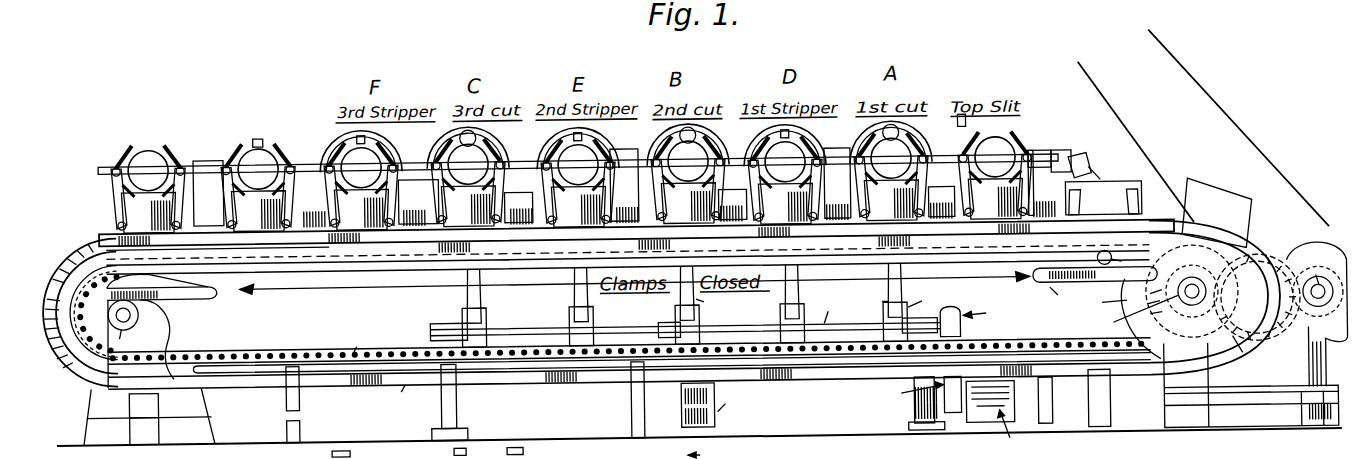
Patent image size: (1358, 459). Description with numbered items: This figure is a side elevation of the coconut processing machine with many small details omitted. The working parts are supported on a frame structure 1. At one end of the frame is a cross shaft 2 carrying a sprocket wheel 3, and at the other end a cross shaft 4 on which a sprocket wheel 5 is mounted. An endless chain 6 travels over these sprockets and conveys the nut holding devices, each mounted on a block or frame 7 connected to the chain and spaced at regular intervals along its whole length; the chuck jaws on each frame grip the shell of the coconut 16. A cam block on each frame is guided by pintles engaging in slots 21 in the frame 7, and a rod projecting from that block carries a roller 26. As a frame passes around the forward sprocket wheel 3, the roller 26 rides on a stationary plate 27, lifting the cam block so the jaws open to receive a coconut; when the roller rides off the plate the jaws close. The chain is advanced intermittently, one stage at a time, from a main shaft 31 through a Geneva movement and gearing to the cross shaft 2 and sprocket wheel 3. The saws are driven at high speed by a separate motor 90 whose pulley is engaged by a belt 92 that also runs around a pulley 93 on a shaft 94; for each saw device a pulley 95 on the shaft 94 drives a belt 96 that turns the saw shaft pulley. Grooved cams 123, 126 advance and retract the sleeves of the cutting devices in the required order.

The frame structure 1 is at (1164, 291).
The cross shaft 2 is at (1138, 318).
The sprocket wheel 3 is at (1257, 314).
The cross shaft 4 is at (123, 328).
The sprocket wheel 5 is at (152, 299).
The endless chain 6 is at (612, 311).
The block or frame 7 is at (626, 205).
The coconut 16 is at (629, 389).
The slots 21 is at (711, 404).
The roller 26 is at (1121, 259).
The stationary plate 27 is at (923, 363).
The main shaft 31 is at (1317, 314).
The motor 90 is at (1001, 417).
The belt 92 is at (917, 403).
The pulley 93 is at (976, 318).
The shaft 94 is at (685, 315).
The pulley 95 is at (925, 310).
The belts 96 is at (685, 305).
The cam 123 is at (536, 452).
The cam 126 is at (438, 453).